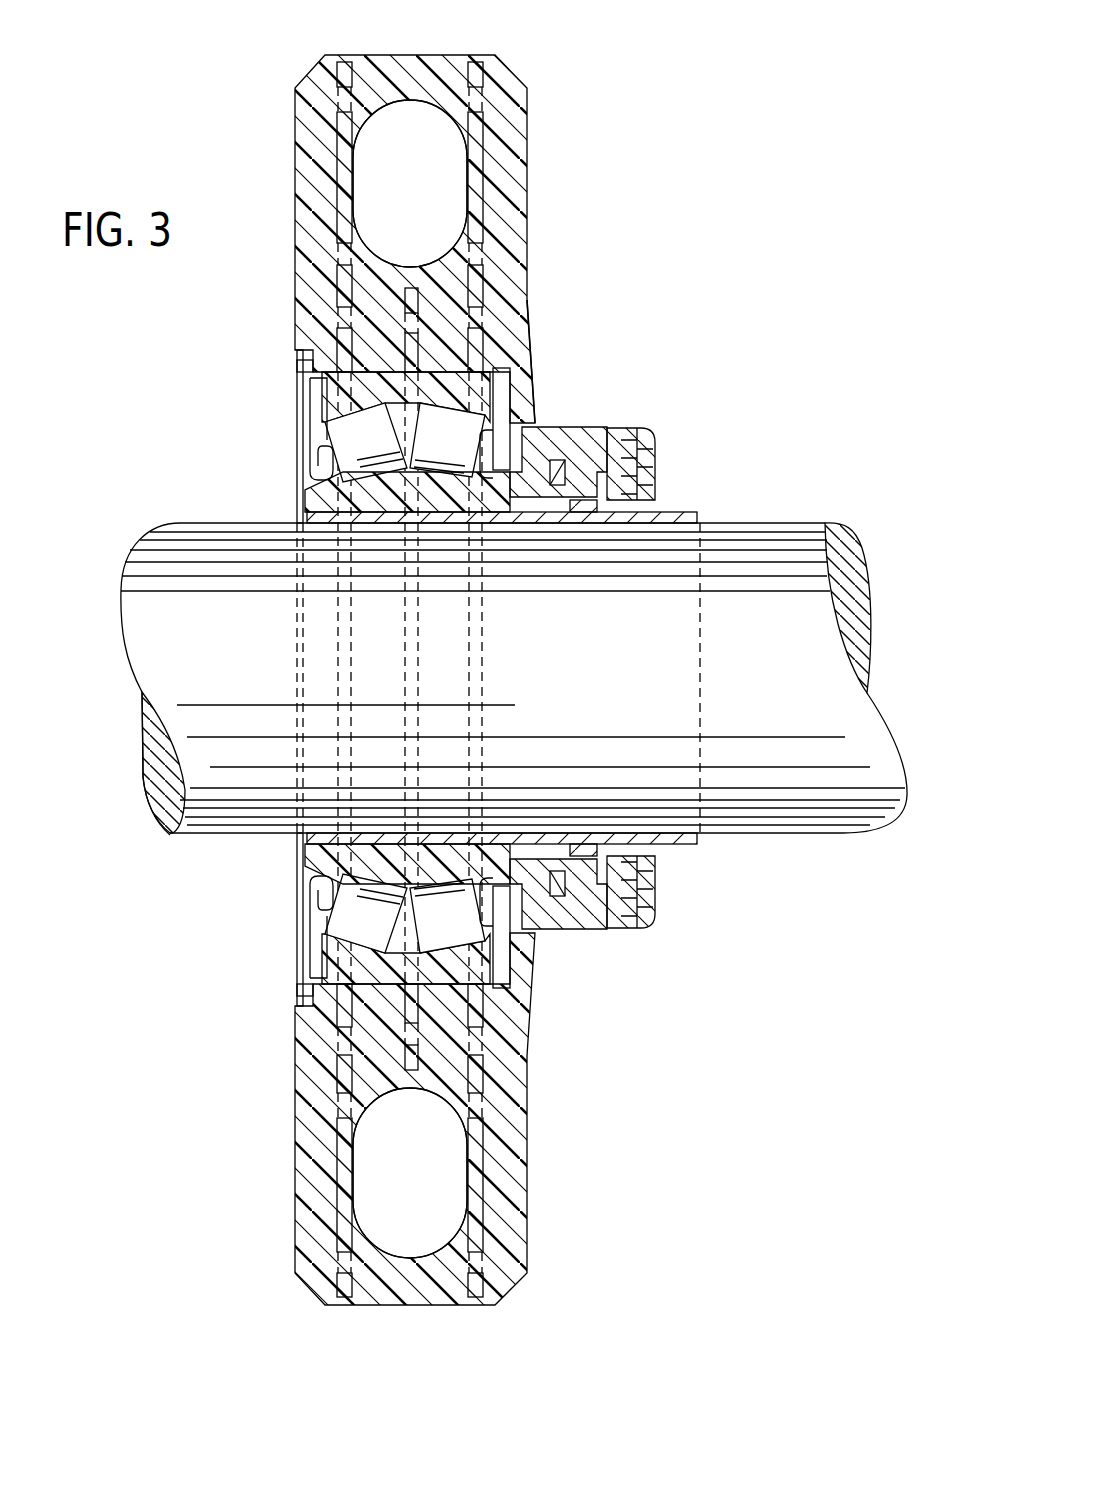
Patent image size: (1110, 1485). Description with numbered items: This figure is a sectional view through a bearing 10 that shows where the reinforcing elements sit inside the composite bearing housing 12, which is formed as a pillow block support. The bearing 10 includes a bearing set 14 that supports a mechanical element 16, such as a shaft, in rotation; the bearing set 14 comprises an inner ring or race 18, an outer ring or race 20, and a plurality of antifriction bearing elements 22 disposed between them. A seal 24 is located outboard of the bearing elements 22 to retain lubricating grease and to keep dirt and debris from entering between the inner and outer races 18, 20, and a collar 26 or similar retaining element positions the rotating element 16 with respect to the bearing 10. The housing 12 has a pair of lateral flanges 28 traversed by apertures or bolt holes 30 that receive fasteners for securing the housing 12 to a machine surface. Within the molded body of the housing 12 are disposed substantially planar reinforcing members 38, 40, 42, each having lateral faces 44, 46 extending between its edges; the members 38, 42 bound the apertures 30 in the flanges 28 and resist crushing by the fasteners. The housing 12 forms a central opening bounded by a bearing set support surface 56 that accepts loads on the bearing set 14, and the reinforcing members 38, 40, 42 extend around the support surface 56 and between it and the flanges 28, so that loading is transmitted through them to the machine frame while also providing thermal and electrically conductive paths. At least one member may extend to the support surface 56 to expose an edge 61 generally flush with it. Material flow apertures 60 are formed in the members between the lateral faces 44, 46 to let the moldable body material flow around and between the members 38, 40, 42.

The bearing 10 is at (218, 940).
The composite bearing housing 12 is at (318, 1013).
The bearing set 14 is at (266, 465).
The mechanical element 16 is at (180, 722).
The inner ring or race 18 is at (527, 483).
The outer ring or race 20 is at (483, 393).
The antifriction bearing elements 22 is at (357, 445).
The seal 24 is at (320, 927).
The collar 26 is at (645, 462).
The lateral flanges 28 is at (513, 103).
The apertures or bolt holes 30 is at (472, 163).
The reinforcing member 38 is at (480, 218).
The reinforcing member 40 is at (411, 288).
The reinforcing member 42 is at (343, 174).
The lateral face 44 is at (465, 112).
The lateral face 46 is at (350, 118).
The bearing set support surface 56 is at (318, 348).
The material flow apertures 60 is at (345, 257).
The edge 61 is at (425, 975).